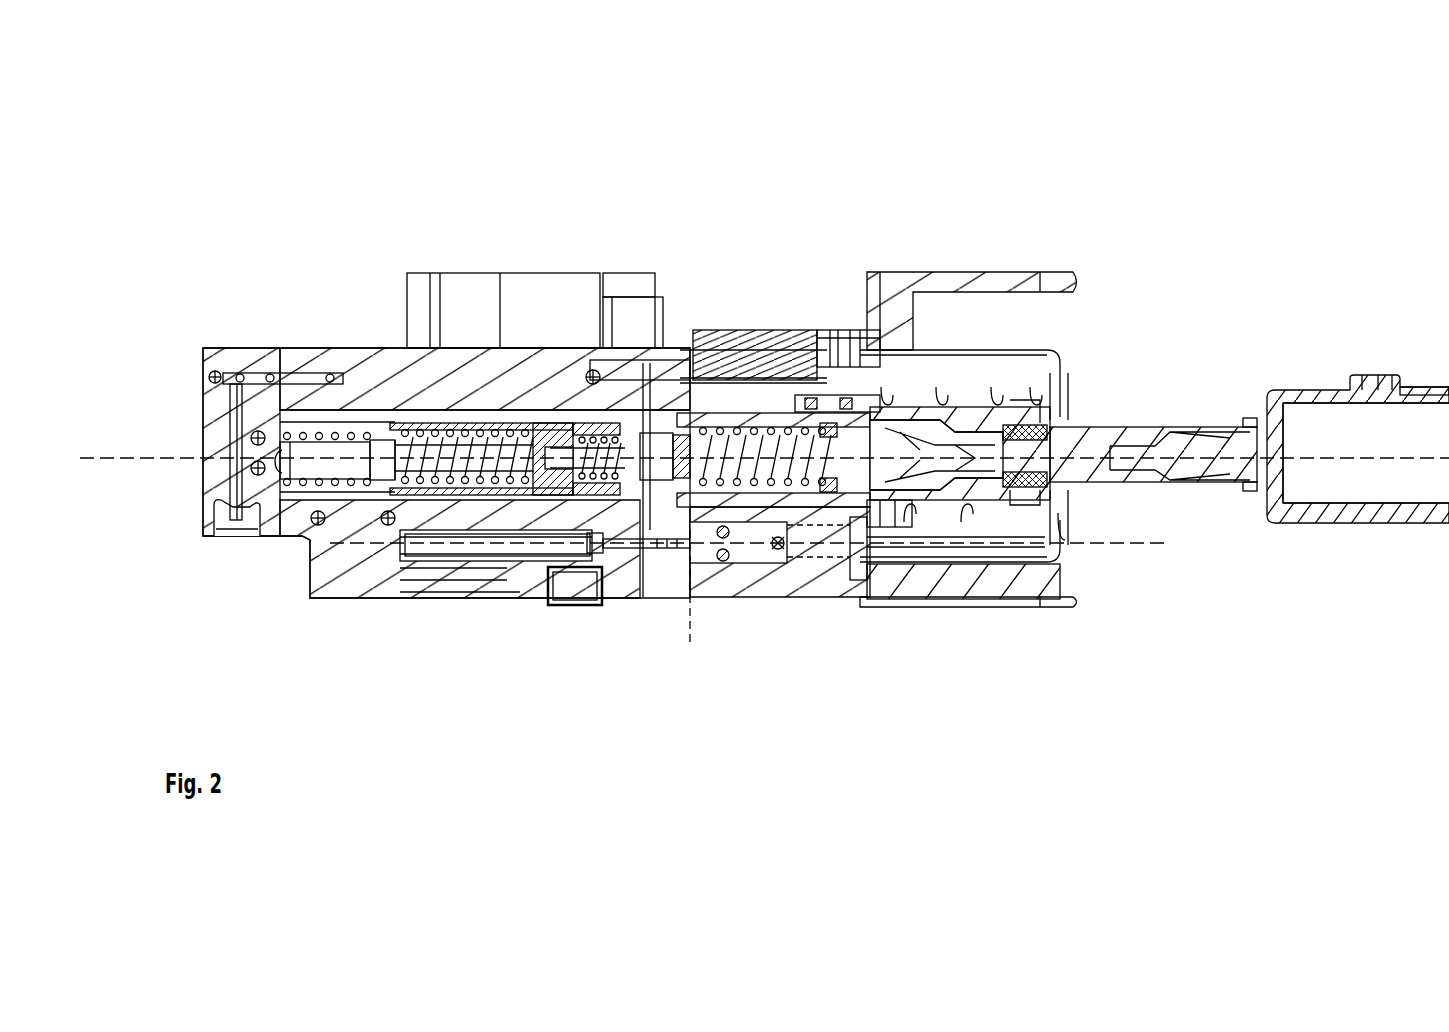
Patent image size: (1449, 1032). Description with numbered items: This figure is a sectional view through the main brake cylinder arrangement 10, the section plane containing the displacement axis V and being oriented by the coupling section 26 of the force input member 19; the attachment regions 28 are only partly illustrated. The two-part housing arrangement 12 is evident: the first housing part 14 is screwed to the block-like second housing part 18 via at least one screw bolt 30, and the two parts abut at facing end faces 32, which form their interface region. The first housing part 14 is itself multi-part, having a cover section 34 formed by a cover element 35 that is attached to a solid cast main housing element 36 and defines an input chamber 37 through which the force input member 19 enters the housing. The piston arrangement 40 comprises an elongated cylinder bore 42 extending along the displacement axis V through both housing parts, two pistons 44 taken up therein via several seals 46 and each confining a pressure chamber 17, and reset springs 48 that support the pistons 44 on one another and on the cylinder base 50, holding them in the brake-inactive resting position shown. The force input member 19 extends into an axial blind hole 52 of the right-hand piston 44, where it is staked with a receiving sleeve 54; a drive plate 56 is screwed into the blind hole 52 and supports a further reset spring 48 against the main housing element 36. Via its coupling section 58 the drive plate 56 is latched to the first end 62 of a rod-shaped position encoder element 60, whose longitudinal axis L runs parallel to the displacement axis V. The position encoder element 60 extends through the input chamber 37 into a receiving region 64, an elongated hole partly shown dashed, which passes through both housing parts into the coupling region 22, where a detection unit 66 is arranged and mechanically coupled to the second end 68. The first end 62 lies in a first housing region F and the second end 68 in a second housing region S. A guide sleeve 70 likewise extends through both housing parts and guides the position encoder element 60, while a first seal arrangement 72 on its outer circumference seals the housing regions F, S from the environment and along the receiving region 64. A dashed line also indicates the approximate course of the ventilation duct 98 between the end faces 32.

The main brake cylinder arrangement 10 is at (1030, 123).
The housing arrangement 12 is at (418, 640).
The first housing part 14 is at (867, 360).
The pressure chamber 17 is at (708, 420).
The second housing part 18 is at (215, 348).
The force input member 19 is at (1212, 395).
The coupling region 22 is at (395, 605).
The coupling section 26 is at (1325, 392).
The attachment regions 28 is at (1020, 265).
The screw bolt 30 is at (690, 360).
The end faces 32 is at (693, 580).
The cover section 34 is at (1075, 357).
The cover element 35 is at (1010, 377).
The main housing element 36 is at (1063, 420).
The input chamber 37 is at (1048, 397).
The piston arrangement 40 is at (382, 405).
The cylinder bore 42 is at (317, 430).
The pistons 44 is at (535, 405).
The seals 46 is at (612, 400).
The reset springs 48 is at (428, 418).
The cylinder base 50 is at (278, 537).
The axial blind hole 52 is at (1055, 560).
The receiving sleeve 54 is at (1010, 545).
The drive plate 56 is at (1067, 532).
The coupling section 58 is at (1060, 547).
The position encoder element 60 is at (1030, 545).
The first end 62 is at (1085, 565).
The receiving region 64 is at (875, 560).
The detection unit 66 is at (568, 583).
The second end 68 is at (600, 545).
The guide sleeve 70 is at (820, 548).
The first seal arrangement 72 is at (698, 565).
The ventilation duct 98 is at (690, 627).
The second housing region S is at (524, 605).
The displacement axis V is at (764, 437).
The first housing region F is at (1075, 530).
The longitudinal axis L is at (747, 554).